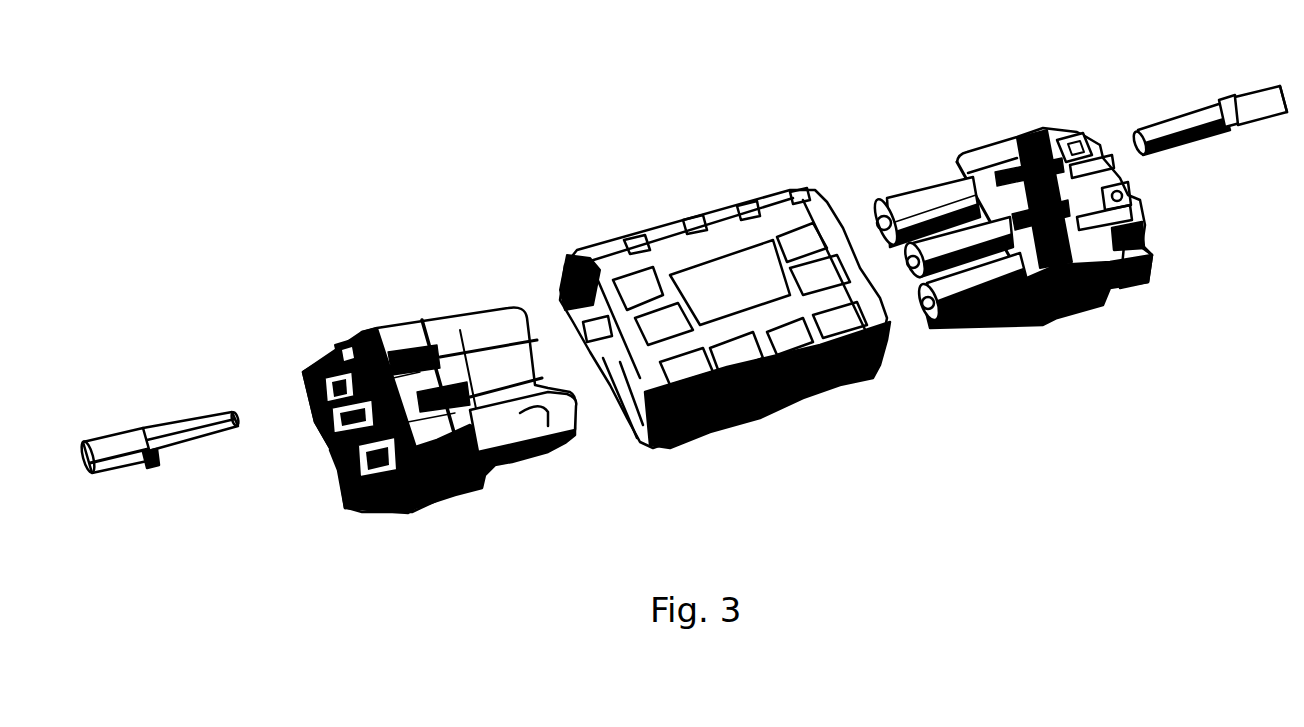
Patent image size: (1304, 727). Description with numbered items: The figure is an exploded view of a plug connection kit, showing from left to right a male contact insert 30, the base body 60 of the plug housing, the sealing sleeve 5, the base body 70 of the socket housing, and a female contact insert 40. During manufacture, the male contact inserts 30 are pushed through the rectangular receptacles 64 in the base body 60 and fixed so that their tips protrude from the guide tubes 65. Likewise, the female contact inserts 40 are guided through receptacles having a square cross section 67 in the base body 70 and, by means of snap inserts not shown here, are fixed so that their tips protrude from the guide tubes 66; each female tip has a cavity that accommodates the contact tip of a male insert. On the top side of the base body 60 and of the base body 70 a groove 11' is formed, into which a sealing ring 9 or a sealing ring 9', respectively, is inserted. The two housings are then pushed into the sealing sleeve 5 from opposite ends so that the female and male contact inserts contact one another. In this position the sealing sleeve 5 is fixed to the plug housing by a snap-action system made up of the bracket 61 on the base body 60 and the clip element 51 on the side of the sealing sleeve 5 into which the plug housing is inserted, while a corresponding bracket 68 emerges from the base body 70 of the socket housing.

The sealing sleeve 5 is at (670, 208).
The sealing ring 9 is at (383, 339).
The sealing ring 9' is at (1009, 155).
The groove 11' is at (435, 342).
The male contact insert 30 is at (146, 422).
The female contact insert 40 is at (1205, 157).
The clip element 51 is at (565, 278).
The base body 60 is at (476, 518).
The bracket 61 is at (345, 347).
The rectangular receptacle 64 is at (354, 492).
The guide tube 65 is at (560, 446).
The guide tube 66 is at (917, 200).
The receptacle having a square cross section 67 is at (1148, 254).
The bracket 68 is at (1080, 145).
The base body 70 is at (1017, 353).